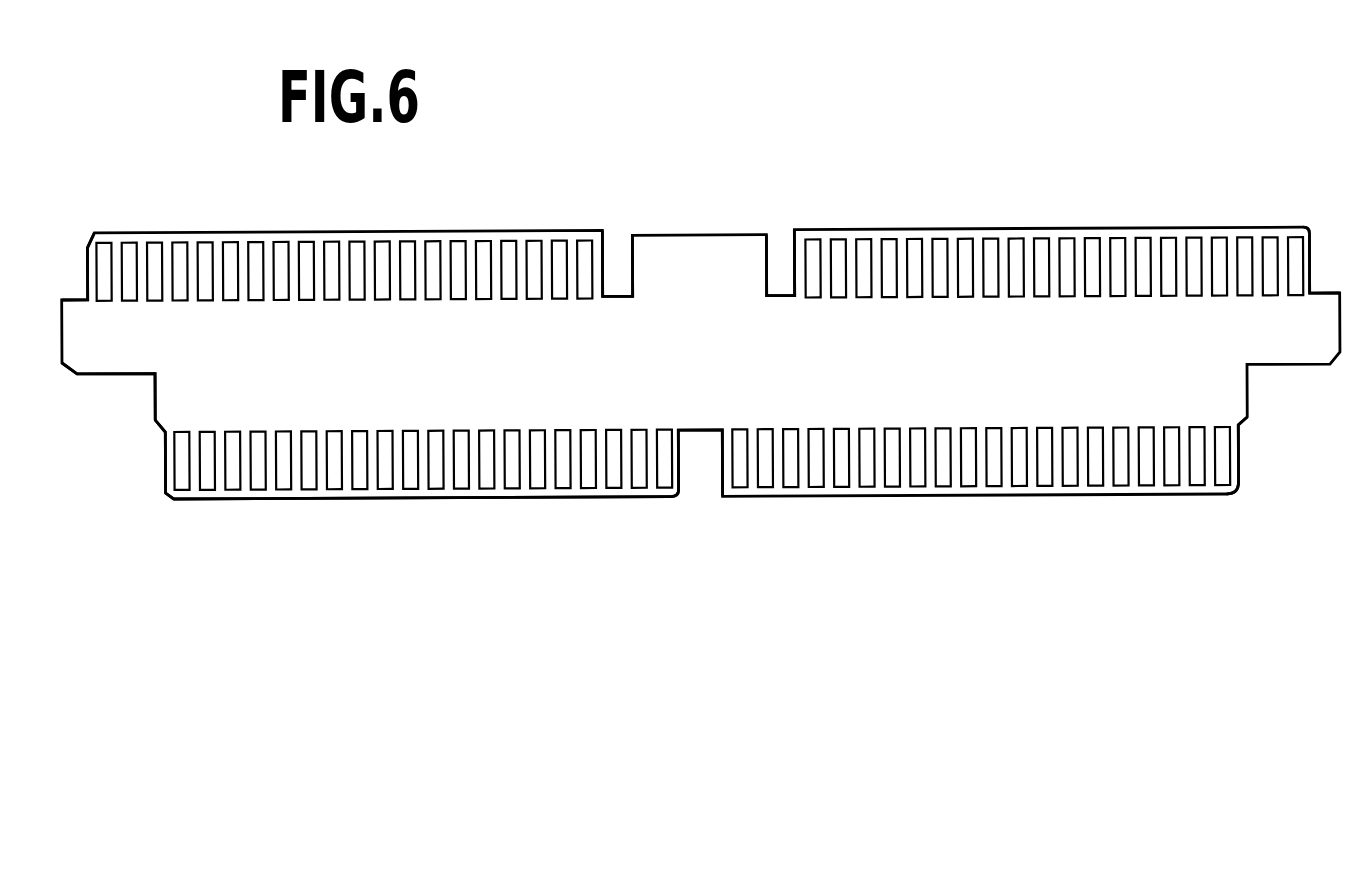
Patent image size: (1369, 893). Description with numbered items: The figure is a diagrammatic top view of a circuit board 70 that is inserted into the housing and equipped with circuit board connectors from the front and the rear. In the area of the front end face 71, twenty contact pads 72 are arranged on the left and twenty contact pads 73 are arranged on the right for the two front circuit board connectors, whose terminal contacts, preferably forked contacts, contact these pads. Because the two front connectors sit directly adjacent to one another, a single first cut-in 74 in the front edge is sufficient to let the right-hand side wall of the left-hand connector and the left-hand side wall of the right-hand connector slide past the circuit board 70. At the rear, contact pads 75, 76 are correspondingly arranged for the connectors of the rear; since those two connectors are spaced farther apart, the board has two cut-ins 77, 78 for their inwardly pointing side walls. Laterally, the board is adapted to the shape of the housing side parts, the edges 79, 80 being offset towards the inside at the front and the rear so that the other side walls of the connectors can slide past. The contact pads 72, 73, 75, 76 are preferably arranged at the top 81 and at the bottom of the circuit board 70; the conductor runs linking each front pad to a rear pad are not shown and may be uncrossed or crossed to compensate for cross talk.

The circuit board 70 is at (707, 205).
The front end face 71 is at (552, 500).
The contact pads 72 is at (183, 486).
The contact pads 73 is at (740, 478).
The first cut-in 74 is at (702, 433).
The contact pads 75 is at (107, 248).
The contact pads 76 is at (813, 242).
The cut-in 77 is at (612, 297).
The cut-in 78 is at (780, 295).
The edge 79 is at (162, 456).
The edge 80 is at (86, 276).
The top 81 is at (185, 393).